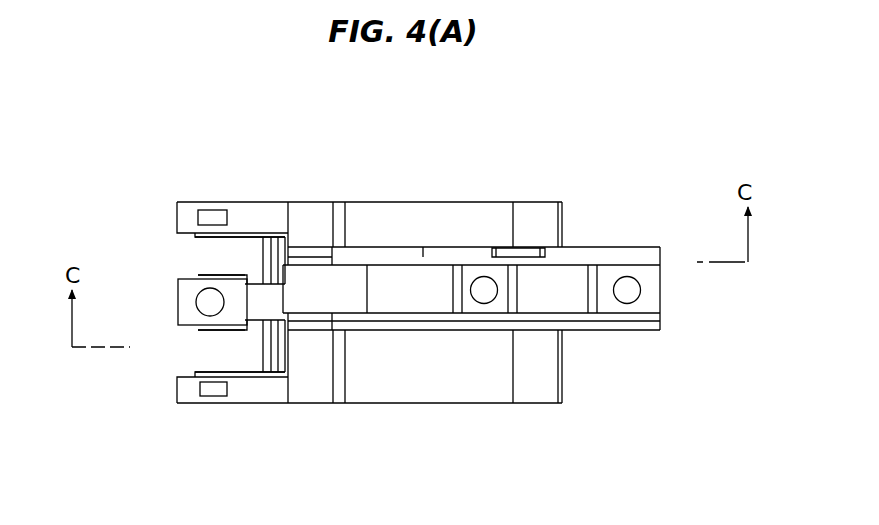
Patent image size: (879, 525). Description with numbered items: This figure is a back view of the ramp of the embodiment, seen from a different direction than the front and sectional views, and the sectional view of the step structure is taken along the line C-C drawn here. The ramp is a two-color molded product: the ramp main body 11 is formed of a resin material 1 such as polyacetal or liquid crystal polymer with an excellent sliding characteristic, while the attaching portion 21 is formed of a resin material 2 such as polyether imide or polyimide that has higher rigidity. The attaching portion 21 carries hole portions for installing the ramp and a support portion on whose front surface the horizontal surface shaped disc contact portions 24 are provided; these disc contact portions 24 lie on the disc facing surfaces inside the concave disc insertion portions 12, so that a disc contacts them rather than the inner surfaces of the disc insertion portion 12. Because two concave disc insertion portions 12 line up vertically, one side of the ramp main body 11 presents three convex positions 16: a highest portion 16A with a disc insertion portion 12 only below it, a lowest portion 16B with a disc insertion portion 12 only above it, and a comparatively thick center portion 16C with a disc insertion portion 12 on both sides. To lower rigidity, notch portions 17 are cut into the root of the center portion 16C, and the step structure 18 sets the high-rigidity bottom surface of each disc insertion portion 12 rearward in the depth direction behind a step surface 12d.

The resin material 1 is at (397, 405).
The ramp main body 11 is at (456, 405).
The resin material 2 is at (404, 256).
The attaching portion 21 is at (472, 256).
The disc insertion portion 12 is at (202, 257).
The step surface 12d is at (275, 242).
The convex position 16 is at (195, 288).
The highest portion convex position 16A is at (180, 390).
The lowest portion convex position 16B is at (183, 218).
The center portion convex position 16C is at (178, 302).
The notch portion 17 is at (257, 270).
The step structure 18 is at (264, 233).
The disc contact portion 24 is at (203, 240).